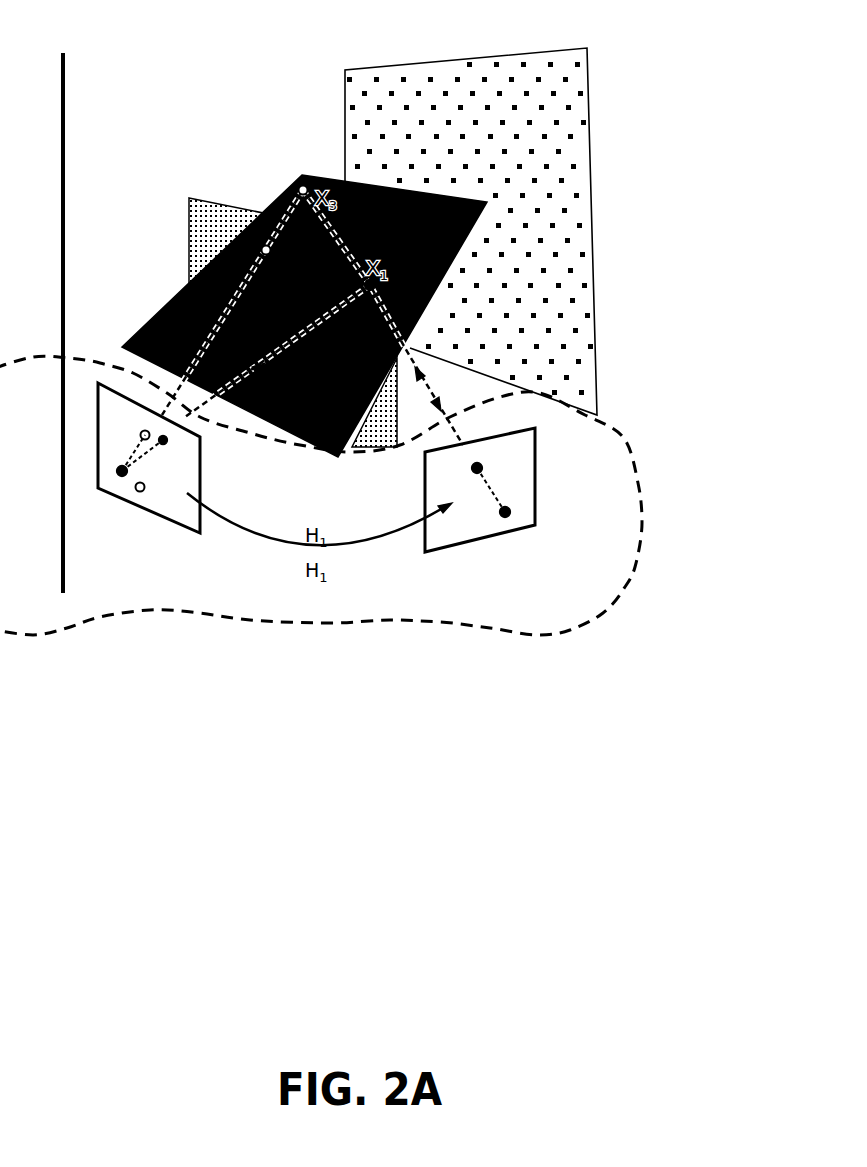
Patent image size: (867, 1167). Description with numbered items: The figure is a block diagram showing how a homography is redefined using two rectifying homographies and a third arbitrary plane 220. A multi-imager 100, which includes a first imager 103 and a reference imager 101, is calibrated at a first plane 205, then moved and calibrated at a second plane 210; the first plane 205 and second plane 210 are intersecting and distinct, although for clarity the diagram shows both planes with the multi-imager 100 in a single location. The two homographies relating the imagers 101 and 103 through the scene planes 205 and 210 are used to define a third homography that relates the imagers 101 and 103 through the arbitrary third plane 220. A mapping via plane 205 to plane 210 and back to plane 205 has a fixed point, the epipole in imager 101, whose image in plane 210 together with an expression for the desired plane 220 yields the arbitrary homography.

The third arbitrary plane 220 is at (349, 80).
The second plane 210 is at (301, 179).
The first plane 205 is at (192, 228).
The first imager 103 is at (140, 495).
The reference imager 101 is at (523, 517).
The multi-imager 100 is at (623, 588).